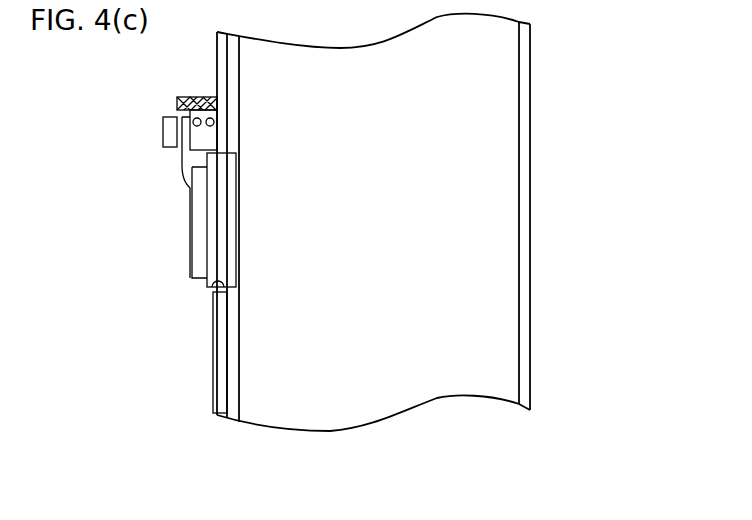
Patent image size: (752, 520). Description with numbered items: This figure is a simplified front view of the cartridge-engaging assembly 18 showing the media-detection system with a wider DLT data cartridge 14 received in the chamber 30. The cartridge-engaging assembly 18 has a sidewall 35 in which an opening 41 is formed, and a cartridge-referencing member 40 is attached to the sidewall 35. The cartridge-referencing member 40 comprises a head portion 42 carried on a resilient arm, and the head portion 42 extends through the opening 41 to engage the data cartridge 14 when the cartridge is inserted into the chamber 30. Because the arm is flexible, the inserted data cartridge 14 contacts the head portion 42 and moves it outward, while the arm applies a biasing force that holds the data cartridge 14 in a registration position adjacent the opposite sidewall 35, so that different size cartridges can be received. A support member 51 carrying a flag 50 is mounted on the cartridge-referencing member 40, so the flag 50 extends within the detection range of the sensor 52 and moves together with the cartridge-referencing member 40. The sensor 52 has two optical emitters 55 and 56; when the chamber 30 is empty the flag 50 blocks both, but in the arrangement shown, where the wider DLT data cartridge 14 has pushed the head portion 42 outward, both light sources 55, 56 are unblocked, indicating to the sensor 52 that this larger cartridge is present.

The data cartridge 14 is at (389, 114).
The cartridge-engaging assembly 18 is at (529, 118).
The chamber 30 is at (481, 217).
The sidewall 35 is at (228, 113).
The cartridge-referencing member 40 is at (192, 262).
The opening 41 is at (213, 290).
The head portion 42 is at (240, 243).
The flag 50 is at (163, 132).
The support member 51 is at (183, 172).
The sensor 52 is at (177, 104).
The optical emitter 55 is at (210, 117).
The optical emitter 56 is at (194, 118).